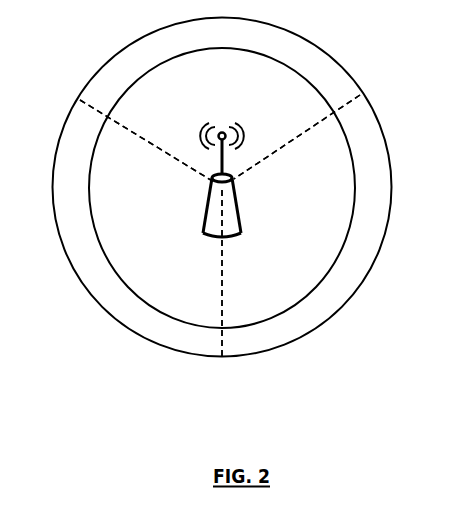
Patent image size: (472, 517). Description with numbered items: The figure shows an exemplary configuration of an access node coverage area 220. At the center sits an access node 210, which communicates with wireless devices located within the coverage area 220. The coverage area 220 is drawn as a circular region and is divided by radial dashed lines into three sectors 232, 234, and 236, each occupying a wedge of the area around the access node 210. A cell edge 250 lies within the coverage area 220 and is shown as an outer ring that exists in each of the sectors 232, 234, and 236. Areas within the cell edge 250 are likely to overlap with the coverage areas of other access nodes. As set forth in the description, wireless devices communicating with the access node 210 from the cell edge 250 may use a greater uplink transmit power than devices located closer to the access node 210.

The access node 210 is at (215, 235).
The coverage area 220 is at (117, 320).
The sector 232 is at (291, 225).
The sector 234 is at (151, 228).
The sector 236 is at (220, 133).
The cell edge 250 is at (222, 176).